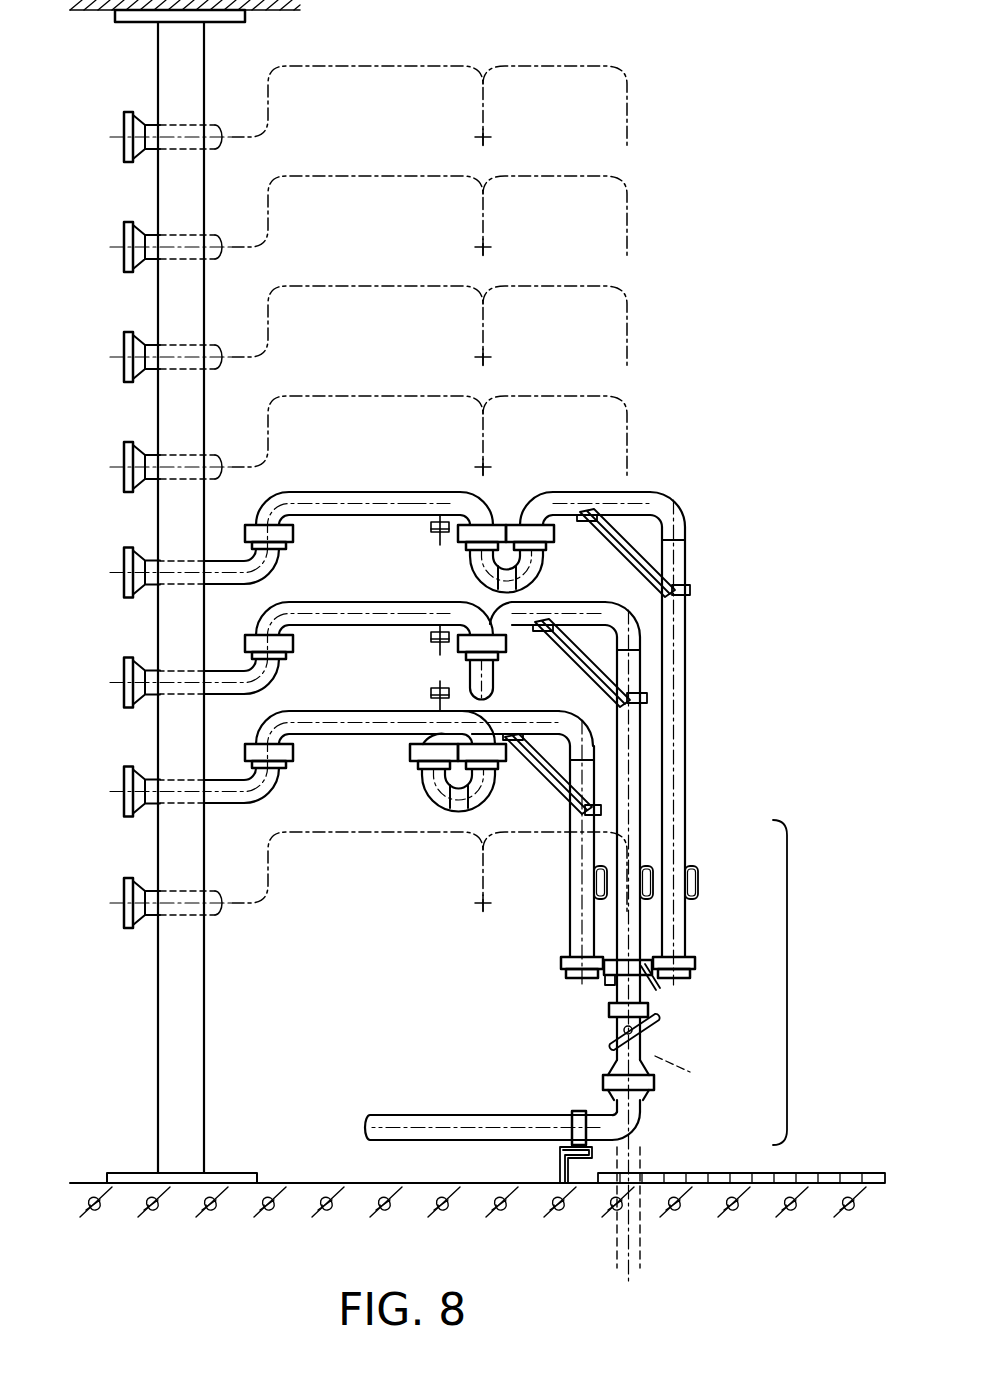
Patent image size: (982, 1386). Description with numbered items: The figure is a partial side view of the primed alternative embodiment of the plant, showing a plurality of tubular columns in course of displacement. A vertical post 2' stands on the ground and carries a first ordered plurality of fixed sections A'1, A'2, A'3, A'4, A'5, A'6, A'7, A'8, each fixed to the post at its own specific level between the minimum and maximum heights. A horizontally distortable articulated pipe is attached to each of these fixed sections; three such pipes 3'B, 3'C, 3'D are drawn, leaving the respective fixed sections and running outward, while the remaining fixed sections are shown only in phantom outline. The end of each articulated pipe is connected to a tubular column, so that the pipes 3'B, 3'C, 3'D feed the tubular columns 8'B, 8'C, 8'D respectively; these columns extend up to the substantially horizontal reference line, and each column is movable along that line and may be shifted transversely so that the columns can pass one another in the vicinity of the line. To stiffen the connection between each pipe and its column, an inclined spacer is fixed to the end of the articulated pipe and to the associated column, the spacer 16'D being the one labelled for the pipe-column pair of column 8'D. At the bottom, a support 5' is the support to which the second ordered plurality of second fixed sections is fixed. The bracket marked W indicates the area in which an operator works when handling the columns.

The first fixed section A'1 is at (351, 880).
The first fixed section A'2 is at (139, 790).
The first fixed section A'3 is at (139, 681).
The first fixed section A'4 is at (139, 571).
The first fixed section A'5 is at (351, 444).
The first fixed section A'6 is at (351, 334).
The first fixed section A'7 is at (351, 224).
The first fixed section A'8 is at (351, 114).
The post 2' is at (188, 596).
The articulated pipe 3'B is at (359, 740).
The articulated pipe 3'C is at (382, 630).
The articulated pipe 3'D is at (405, 521).
The tubular column 8'B is at (657, 848).
The tubular column 8'C is at (561, 943).
The tubular column 8'D is at (712, 738).
The inclined spacer 16'D is at (665, 553).
The support 5' is at (622, 1159).
The operator working area W is at (798, 982).